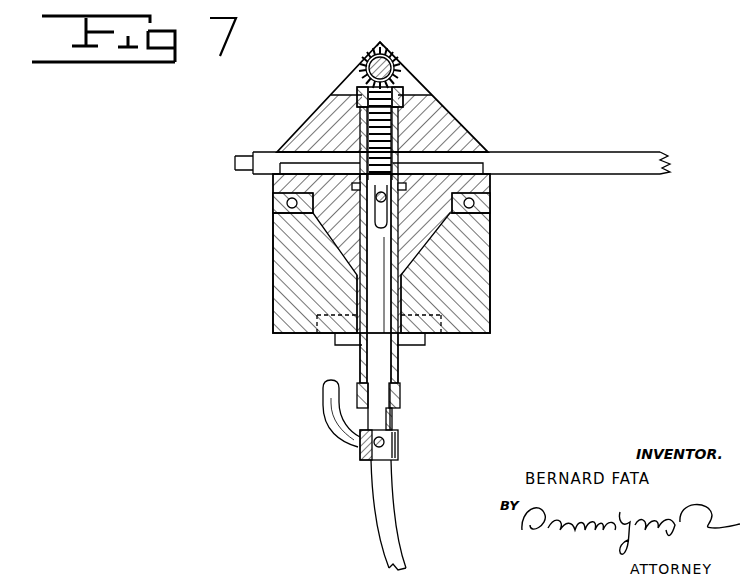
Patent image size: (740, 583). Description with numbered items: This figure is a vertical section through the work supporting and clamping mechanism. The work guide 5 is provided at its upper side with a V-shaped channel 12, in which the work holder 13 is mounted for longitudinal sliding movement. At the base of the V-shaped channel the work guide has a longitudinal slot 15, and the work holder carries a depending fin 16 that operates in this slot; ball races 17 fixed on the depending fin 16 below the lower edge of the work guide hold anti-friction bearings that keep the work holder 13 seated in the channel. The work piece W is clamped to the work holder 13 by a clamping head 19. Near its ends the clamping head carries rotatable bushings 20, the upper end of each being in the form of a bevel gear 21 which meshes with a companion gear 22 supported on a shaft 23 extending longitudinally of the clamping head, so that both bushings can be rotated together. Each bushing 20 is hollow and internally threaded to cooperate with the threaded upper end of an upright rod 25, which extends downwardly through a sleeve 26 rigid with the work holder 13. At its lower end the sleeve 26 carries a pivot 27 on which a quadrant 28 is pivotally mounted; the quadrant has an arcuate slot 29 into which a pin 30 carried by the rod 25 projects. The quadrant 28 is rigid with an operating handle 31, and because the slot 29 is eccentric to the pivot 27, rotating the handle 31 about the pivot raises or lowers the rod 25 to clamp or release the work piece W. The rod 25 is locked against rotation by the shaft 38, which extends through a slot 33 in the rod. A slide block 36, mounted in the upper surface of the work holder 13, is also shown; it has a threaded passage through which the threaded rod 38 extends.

The work guide 5 is at (273, 310).
The V-shaped channel 12 is at (332, 243).
The work holder 13 is at (440, 238).
The longitudinal slot 15 is at (410, 288).
The depending fin 16 is at (408, 305).
The ball races 17 is at (335, 340).
The clamping head 19 is at (478, 125).
The rotatable bushing 20 is at (368, 128).
The bevel gear 21 is at (407, 90).
The companion gear 22 is at (382, 43).
The shaft 23 is at (375, 60).
The upright rod 25 is at (402, 120).
The sleeve 26 is at (360, 354).
The pivot 27 is at (400, 370).
The quadrant 28 is at (324, 380).
The arcuate slot 29 is at (340, 436).
The pin 30 is at (366, 462).
The operating handle 31 is at (388, 520).
The slot 33 is at (362, 225).
The slide block 36 is at (375, 215).
The shaft 38 is at (365, 165).
The work piece W is at (653, 152).